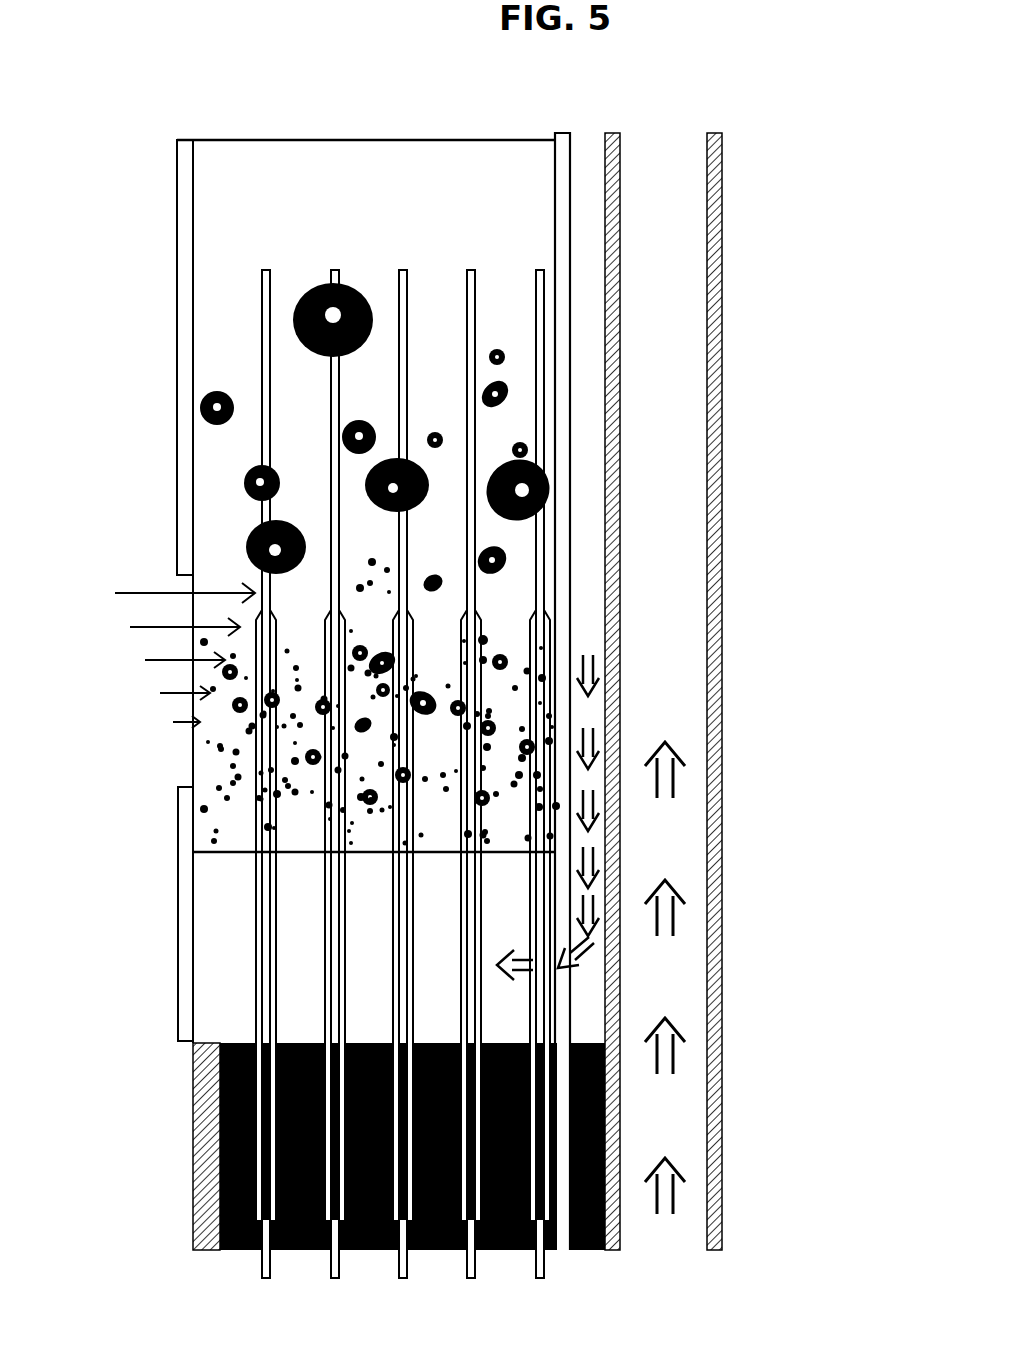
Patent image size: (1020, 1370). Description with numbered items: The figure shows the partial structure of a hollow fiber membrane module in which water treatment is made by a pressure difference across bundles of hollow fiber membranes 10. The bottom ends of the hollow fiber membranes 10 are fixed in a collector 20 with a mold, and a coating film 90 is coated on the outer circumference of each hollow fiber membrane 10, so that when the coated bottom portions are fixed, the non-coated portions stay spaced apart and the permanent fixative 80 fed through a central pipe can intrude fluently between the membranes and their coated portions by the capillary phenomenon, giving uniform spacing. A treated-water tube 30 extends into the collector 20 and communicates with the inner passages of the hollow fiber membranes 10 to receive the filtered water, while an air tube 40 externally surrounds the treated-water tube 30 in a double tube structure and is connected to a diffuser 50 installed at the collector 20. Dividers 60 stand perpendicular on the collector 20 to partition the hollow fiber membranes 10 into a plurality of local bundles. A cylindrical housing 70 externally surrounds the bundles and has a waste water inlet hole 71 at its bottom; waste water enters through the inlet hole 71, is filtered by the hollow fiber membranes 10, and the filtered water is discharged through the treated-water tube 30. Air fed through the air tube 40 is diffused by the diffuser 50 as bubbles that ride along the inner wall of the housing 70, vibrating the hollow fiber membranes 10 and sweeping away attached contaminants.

The hollow fiber membrane 10 is at (335, 270).
The collector 20 is at (195, 1163).
The treated-water tube 30 is at (617, 676).
The air tube 40 is at (563, 557).
The diffuser 50 is at (205, 966).
The divider 60 is at (444, 162).
The housing 70 is at (185, 356).
The waste water inlet hole 71 is at (172, 676).
The permanent fixative 80 is at (300, 1252).
The coating film 90 is at (220, 1097).